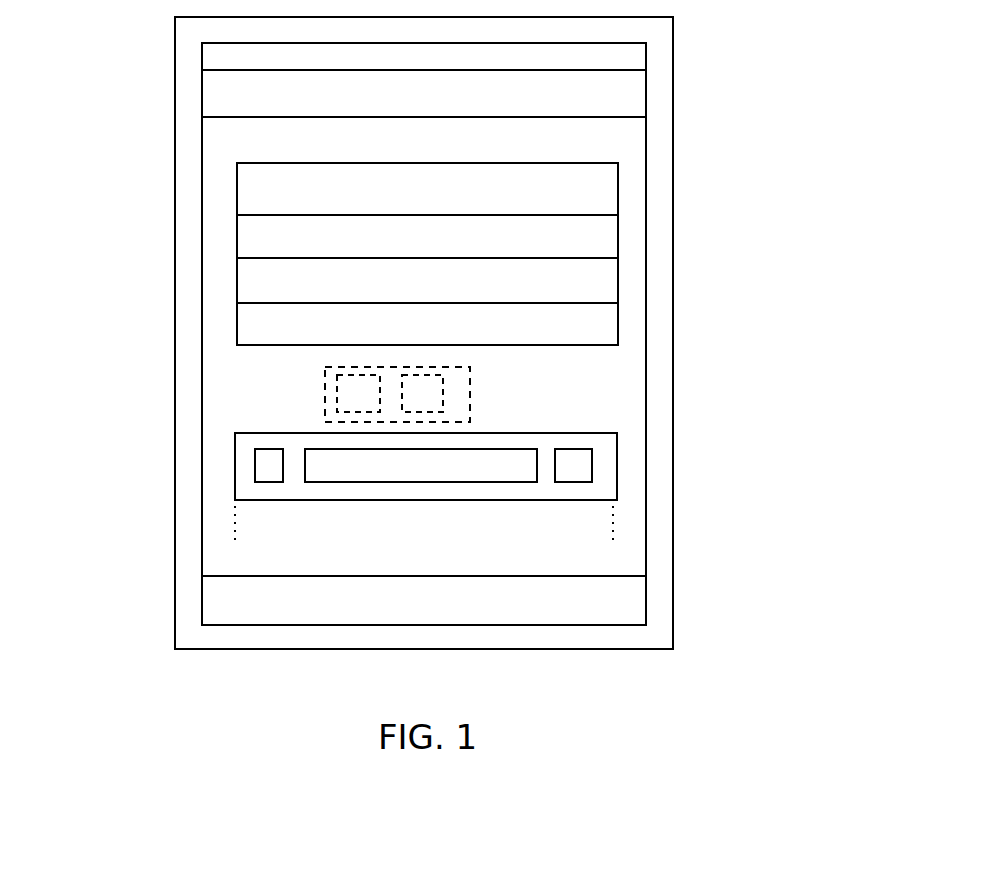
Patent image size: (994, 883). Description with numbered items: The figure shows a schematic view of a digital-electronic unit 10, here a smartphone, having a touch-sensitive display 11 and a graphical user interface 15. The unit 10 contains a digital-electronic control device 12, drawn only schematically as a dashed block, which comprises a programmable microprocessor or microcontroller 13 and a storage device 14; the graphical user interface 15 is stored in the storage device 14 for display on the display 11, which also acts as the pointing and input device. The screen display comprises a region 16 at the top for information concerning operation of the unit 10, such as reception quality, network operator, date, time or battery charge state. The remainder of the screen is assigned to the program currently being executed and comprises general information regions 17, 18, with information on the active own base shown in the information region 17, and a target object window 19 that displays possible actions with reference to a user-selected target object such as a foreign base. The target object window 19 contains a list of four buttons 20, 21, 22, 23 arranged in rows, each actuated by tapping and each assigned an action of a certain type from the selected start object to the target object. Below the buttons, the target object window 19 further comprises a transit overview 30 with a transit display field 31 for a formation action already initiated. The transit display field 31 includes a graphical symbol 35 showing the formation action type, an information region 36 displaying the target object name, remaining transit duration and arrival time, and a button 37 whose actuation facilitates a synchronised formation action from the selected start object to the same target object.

The digital-electronic unit 10 is at (673, 320).
The touch-sensitive display 11 is at (646, 250).
The digital-electronic control device 12 is at (327, 385).
The microprocessor or microcontroller 13 is at (338, 402).
The storage device 14 is at (443, 388).
The graphical user interface 15 is at (646, 388).
The region for displaying information 16 is at (633, 57).
The general information region 17 is at (633, 95).
The general information region 18 is at (628, 598).
The target object window 19 is at (633, 195).
The button 20 is at (235, 185).
The button 21 is at (237, 237).
The button 22 is at (237, 284).
The button 23 is at (237, 325).
The transit overview 30 is at (617, 466).
The transit display field 31 is at (600, 483).
The graphical symbol 35 is at (268, 482).
The information region 36 is at (415, 482).
The button 37 is at (571, 482).